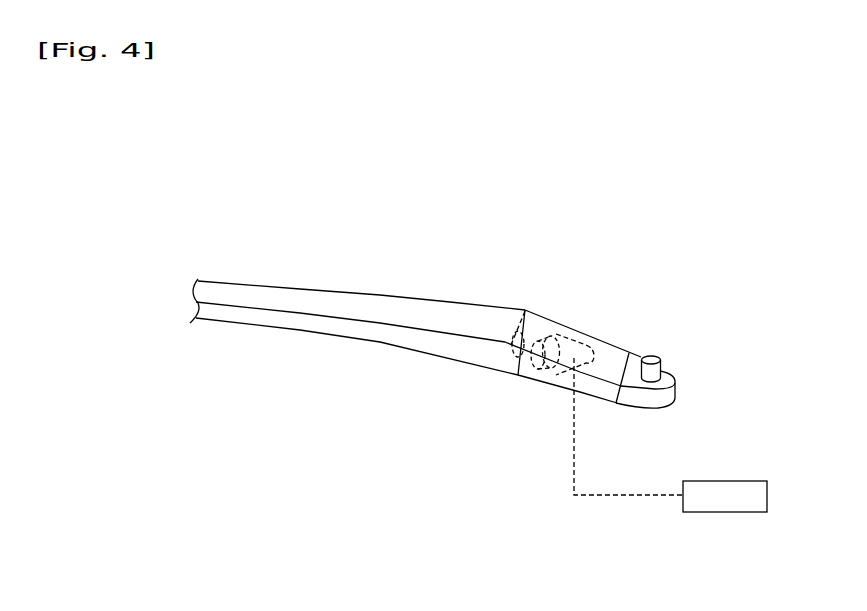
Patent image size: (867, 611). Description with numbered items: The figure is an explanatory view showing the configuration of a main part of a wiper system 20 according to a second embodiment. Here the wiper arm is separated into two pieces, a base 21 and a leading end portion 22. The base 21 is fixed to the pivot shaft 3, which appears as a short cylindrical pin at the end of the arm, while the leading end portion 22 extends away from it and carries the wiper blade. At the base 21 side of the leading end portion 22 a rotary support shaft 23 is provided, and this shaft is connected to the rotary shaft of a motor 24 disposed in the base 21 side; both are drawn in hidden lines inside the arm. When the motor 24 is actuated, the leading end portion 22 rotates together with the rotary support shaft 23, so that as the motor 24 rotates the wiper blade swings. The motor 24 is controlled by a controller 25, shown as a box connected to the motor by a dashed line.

The wiper system 20 is at (342, 260).
The base 21 is at (614, 350).
The leading end portion 22 is at (350, 328).
The rotary support shaft 23 is at (547, 336).
The motor 24 is at (555, 380).
The controller 25 is at (748, 514).
The pivot shaft 3 is at (659, 368).